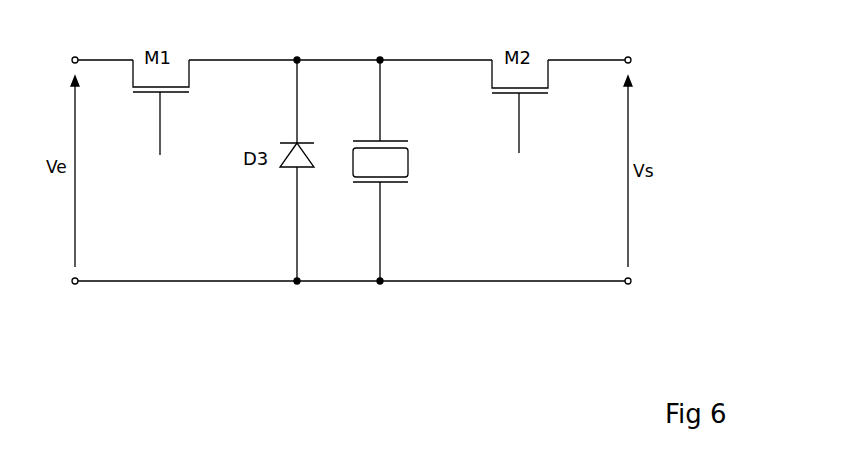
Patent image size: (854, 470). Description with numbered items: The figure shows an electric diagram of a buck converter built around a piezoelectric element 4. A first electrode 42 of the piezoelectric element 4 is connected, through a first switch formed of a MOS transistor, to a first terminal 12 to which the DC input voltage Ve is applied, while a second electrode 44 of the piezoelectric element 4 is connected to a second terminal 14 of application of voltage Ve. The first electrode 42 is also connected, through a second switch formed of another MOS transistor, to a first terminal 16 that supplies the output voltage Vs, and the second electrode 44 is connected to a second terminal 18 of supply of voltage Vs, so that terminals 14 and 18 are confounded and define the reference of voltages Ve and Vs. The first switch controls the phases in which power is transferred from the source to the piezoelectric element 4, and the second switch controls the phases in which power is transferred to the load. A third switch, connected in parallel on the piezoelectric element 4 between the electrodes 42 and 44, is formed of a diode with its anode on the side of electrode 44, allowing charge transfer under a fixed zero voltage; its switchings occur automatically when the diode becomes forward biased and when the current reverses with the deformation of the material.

The first terminal of application of DC input voltage 12 is at (74, 56).
The second terminal of application of voltage 14 is at (73, 284).
The first terminal of supply of voltage 16 is at (630, 57).
The second terminal of supply of voltage 18 is at (630, 284).
The piezoelectric element 4 is at (416, 170).
The first electrode 42 is at (383, 140).
The second electrode 44 is at (382, 184).